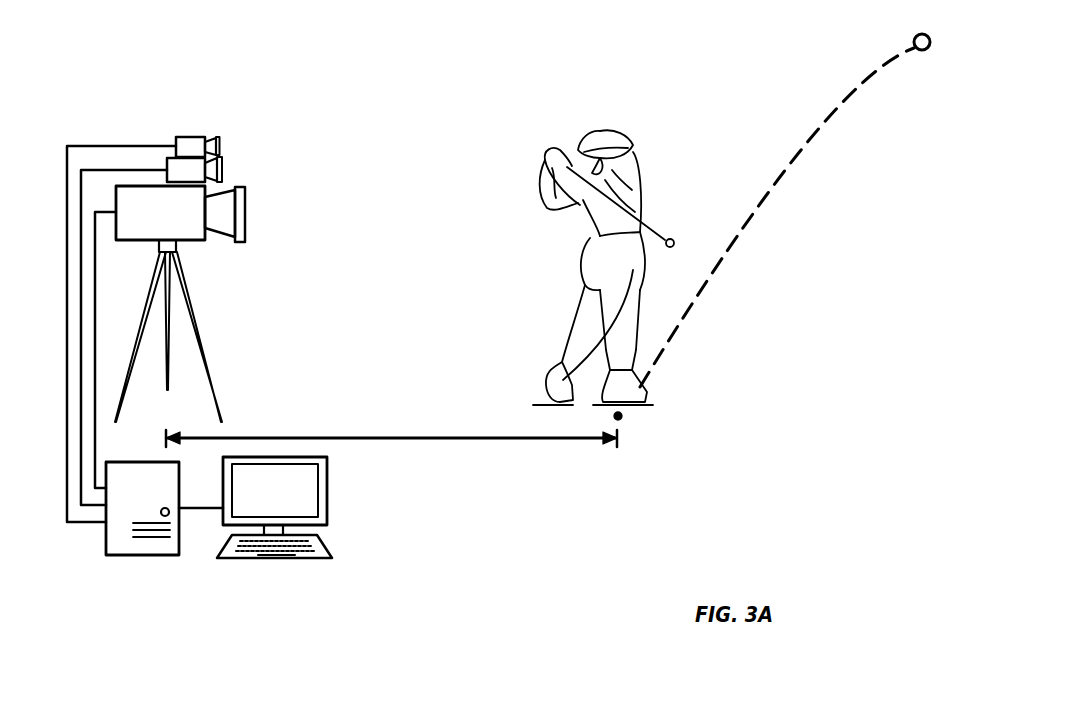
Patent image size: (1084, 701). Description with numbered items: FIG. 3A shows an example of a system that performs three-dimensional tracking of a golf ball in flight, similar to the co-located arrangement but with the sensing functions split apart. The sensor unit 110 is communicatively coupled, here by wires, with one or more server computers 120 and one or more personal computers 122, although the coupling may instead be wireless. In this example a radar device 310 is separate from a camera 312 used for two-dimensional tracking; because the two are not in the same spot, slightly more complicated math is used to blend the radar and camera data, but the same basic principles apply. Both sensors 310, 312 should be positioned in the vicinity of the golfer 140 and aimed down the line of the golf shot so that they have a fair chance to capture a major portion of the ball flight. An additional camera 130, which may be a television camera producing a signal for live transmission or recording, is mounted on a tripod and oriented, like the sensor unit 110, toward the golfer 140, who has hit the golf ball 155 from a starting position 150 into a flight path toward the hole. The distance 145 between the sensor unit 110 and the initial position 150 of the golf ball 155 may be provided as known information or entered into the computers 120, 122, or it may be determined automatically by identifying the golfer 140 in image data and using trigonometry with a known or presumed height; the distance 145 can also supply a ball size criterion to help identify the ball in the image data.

The sensor unit 110 is at (250, 142).
The server computer 120 is at (148, 555).
The personal computer 122 is at (302, 558).
The additional camera 130 is at (193, 240).
The golfer 140 is at (511, 133).
The distance 145 is at (477, 440).
The starting position 150 is at (620, 420).
The golf ball 155 is at (913, 36).
The radar device 310 is at (188, 137).
The camera 312 is at (168, 158).